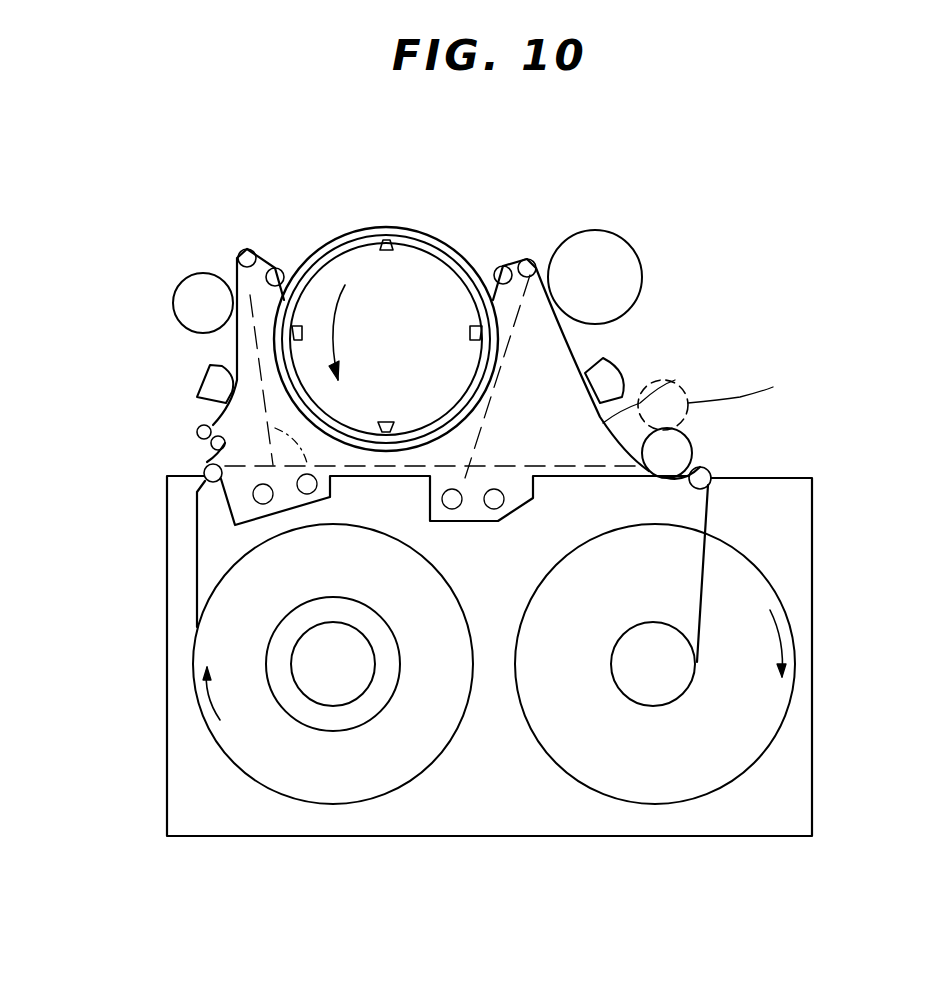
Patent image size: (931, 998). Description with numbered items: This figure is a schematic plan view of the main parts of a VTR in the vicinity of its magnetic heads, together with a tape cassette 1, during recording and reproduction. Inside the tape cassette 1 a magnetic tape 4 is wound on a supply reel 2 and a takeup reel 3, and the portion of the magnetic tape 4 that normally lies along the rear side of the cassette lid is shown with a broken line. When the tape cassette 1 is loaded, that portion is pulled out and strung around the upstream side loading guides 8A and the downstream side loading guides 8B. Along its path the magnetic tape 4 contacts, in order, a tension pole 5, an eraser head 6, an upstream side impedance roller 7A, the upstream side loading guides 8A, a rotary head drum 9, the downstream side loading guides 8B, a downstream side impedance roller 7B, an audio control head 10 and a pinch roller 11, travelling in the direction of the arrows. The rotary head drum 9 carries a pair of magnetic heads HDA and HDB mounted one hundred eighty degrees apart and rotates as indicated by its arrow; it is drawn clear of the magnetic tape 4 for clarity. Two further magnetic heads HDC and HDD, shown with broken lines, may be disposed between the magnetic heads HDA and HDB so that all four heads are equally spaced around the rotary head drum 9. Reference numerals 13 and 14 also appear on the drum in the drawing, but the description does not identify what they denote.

The tape cassette 1 is at (162, 741).
The supply reel 2 is at (312, 688).
The takeup reel 3 is at (678, 685).
The magnetic tape 4 is at (298, 398).
The tension pole 5 is at (193, 449).
The eraser head 6 is at (202, 383).
The upstream side impedance roller 7A is at (173, 298).
The downstream side impedance roller 7B is at (638, 253).
The upstream side loading guides 8A is at (281, 268).
The downstream side loading guides 8B is at (500, 268).
The rotary head drum 9 is at (398, 226).
The audio control head 10 is at (608, 367).
The pinch roller 11 is at (690, 402).
The lower drum 13 is at (360, 257).
The upper drum 14 is at (438, 243).
The magnetic head HDA is at (386, 409).
The magnetic head HDB is at (389, 261).
The magnetic head HDC is at (298, 324).
The magnetic head HDD is at (482, 337).